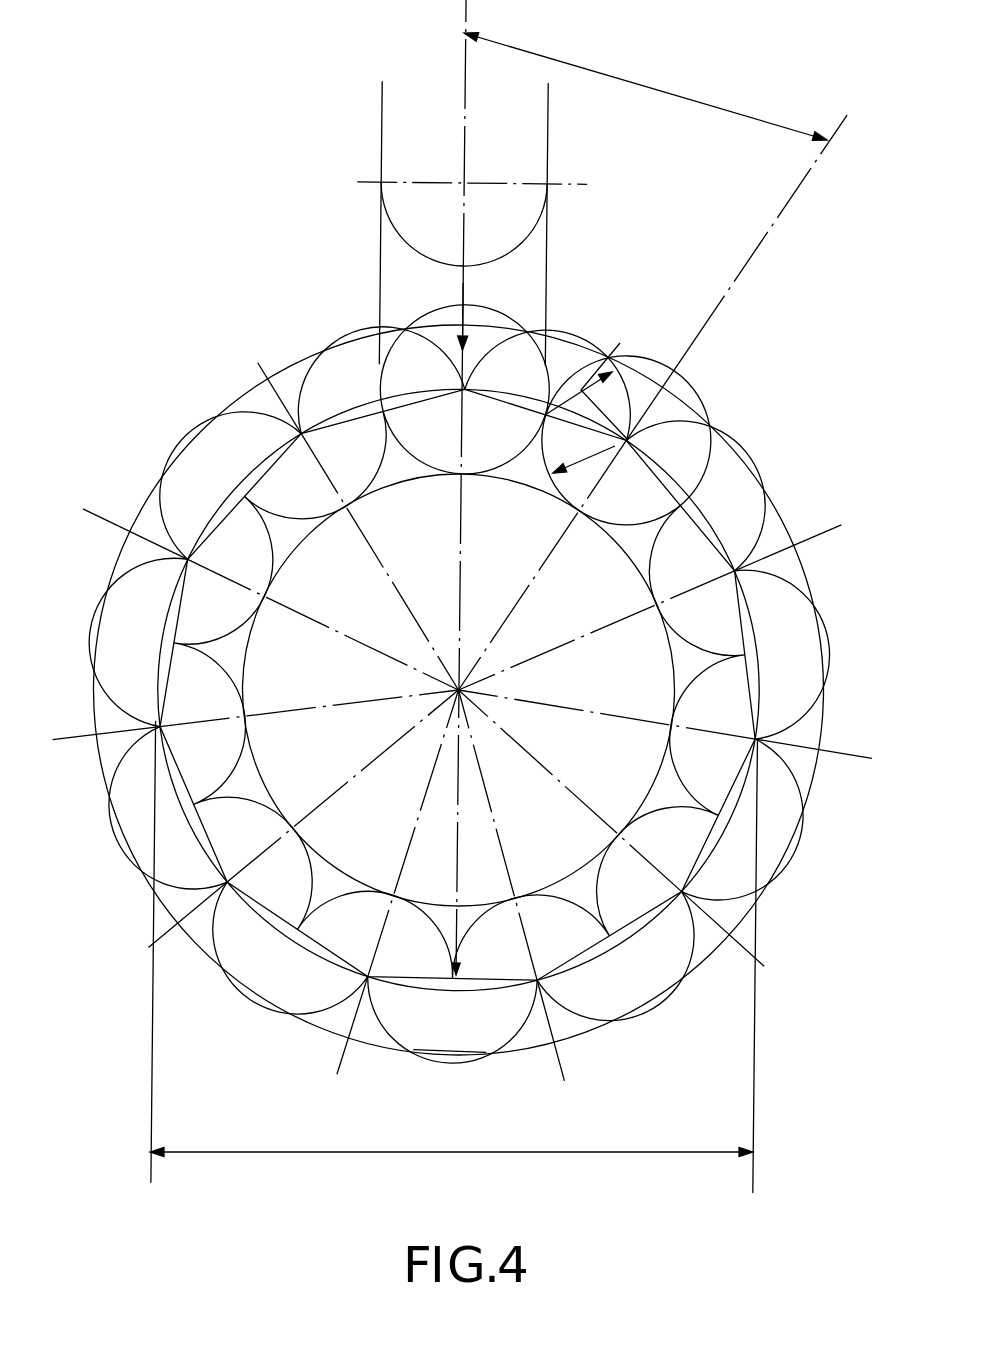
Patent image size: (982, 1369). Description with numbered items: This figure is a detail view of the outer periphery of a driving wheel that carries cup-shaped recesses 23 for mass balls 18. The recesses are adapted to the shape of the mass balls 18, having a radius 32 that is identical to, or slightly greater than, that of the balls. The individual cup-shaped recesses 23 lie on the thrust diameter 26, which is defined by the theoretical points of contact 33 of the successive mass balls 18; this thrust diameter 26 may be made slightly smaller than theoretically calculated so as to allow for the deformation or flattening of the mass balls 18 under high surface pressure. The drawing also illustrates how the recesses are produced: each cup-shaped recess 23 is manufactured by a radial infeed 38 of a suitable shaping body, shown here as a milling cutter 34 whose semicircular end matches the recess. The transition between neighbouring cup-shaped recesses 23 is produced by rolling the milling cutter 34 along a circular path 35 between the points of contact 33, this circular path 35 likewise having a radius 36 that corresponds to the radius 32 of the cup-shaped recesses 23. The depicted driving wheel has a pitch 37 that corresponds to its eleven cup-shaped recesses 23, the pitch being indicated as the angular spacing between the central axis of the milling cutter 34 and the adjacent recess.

The mass balls 18 is at (493, 302).
The cup-shaped recesses 23 is at (643, 495).
The thrust diameter 26 is at (478, 1153).
The radius 32 is at (588, 465).
The points of contact 33 is at (518, 325).
The milling cutter 34 is at (420, 158).
The circular path 35 is at (680, 362).
The radius 36 is at (560, 320).
The pitch 37 is at (642, 82).
The radial infeed 38 is at (460, 293).